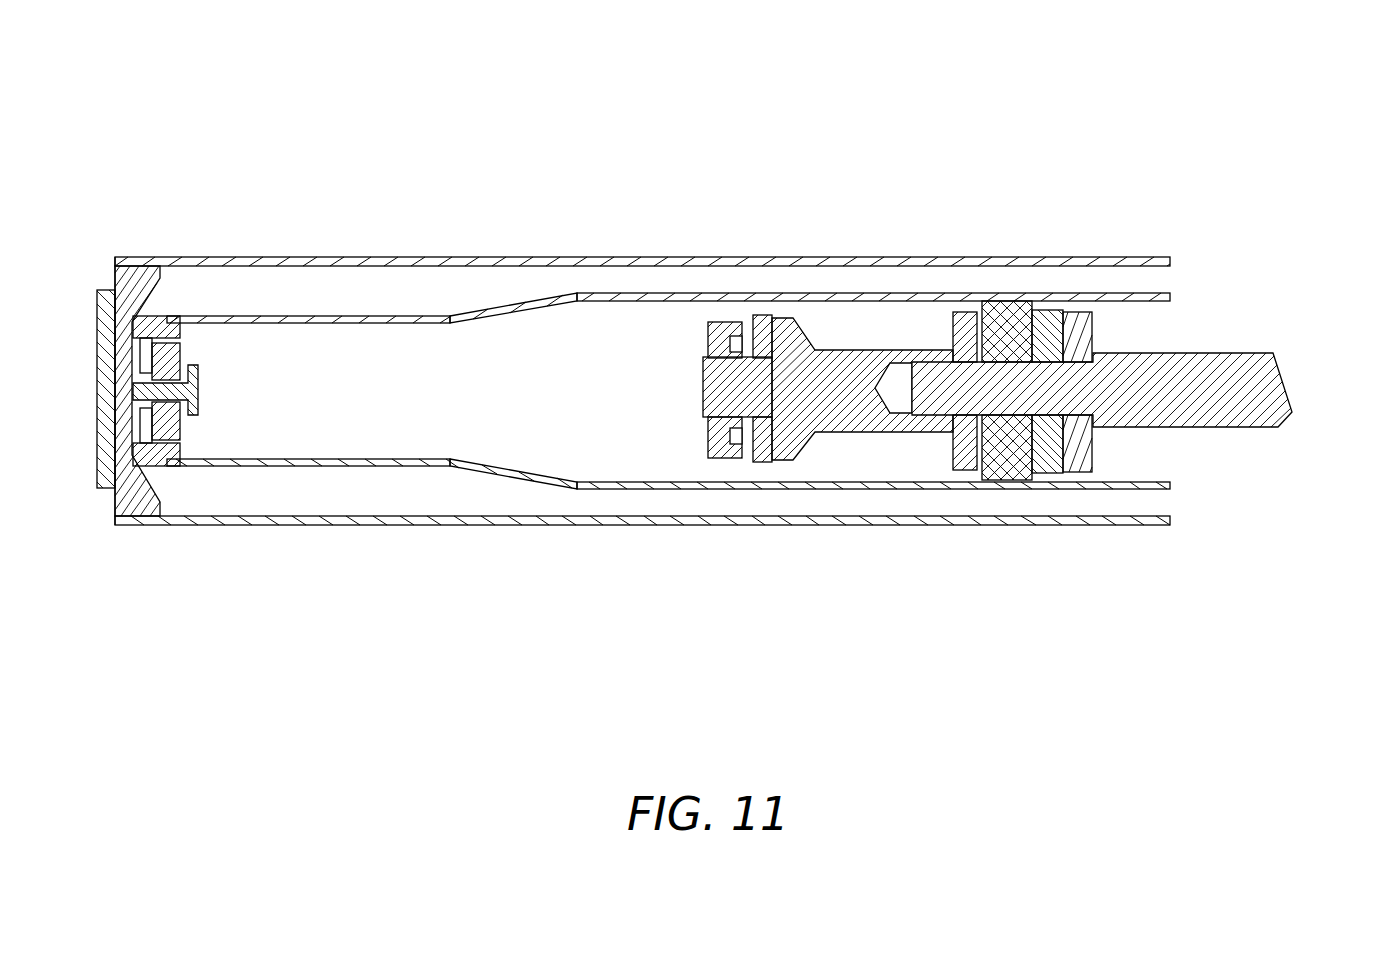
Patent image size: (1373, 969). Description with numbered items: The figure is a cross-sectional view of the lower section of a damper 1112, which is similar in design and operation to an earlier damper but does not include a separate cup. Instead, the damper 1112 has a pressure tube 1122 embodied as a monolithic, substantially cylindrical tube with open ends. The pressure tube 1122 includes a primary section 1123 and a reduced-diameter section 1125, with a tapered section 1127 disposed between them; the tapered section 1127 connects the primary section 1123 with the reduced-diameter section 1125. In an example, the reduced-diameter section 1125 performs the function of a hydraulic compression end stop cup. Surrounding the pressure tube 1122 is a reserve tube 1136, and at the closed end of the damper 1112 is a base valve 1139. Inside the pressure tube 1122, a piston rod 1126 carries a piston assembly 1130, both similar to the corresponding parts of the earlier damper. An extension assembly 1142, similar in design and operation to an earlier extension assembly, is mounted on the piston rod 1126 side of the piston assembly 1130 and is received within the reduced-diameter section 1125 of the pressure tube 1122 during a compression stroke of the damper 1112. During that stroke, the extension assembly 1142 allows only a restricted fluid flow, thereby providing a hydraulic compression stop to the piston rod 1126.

The damper 1112 is at (1262, 106).
The pressure tube 1122 is at (643, 274).
The primary section 1123 is at (700, 293).
The reduced-diameter section 1125 is at (268, 316).
The piston rod 1126 is at (1232, 428).
The tapered section 1127 is at (503, 308).
The piston assembly 1130 is at (1003, 301).
The reserve tube 1136 is at (825, 257).
The base valve 1139 is at (126, 352).
The extension assembly 1142 is at (848, 457).